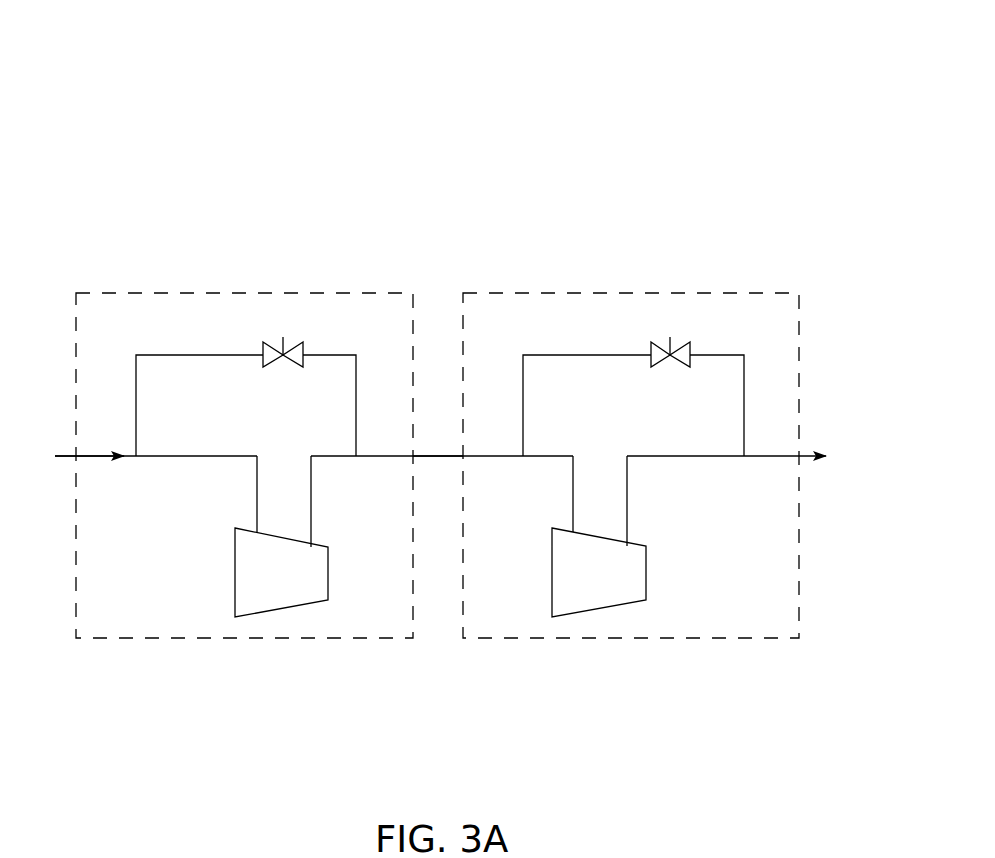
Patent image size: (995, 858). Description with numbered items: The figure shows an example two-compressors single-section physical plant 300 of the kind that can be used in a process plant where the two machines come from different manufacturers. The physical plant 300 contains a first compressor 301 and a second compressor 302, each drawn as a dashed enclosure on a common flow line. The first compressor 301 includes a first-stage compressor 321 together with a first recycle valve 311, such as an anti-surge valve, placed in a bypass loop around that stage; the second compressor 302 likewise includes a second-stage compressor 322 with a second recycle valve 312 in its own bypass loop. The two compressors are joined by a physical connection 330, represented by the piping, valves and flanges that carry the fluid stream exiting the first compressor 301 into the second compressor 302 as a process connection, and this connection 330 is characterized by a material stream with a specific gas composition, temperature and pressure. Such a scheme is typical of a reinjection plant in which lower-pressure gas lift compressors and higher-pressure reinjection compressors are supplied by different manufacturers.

The physical plant 300 is at (702, 70).
The first compressor 301 is at (243, 293).
The second compressor 302 is at (630, 293).
The first recycle valve 311 is at (305, 342).
The second recycle valve 312 is at (692, 342).
The stage-1 compressor 321 is at (278, 530).
The stage-2 compressor 322 is at (595, 530).
The physical connection 330 is at (438, 475).